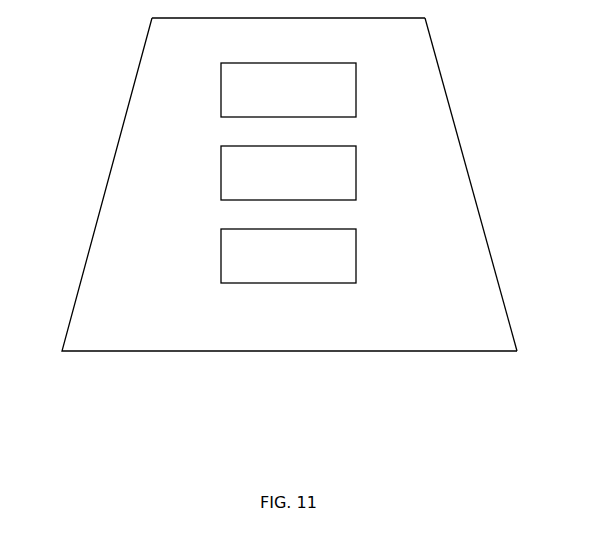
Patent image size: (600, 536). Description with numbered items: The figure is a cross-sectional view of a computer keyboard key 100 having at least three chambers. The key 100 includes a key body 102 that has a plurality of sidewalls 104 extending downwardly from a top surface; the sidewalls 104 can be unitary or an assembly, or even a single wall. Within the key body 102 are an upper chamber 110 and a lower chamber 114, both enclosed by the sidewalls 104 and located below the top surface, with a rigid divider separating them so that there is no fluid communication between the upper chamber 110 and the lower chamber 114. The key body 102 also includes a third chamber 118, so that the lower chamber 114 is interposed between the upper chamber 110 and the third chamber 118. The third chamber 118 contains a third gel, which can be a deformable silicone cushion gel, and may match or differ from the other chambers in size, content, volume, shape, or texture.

The key 100 is at (158, 411).
The key body 102 is at (436, 58).
The sidewalls 104 is at (477, 203).
The upper chamber 110 is at (221, 91).
The lower chamber 114 is at (221, 173).
The third chamber 118 is at (221, 256).